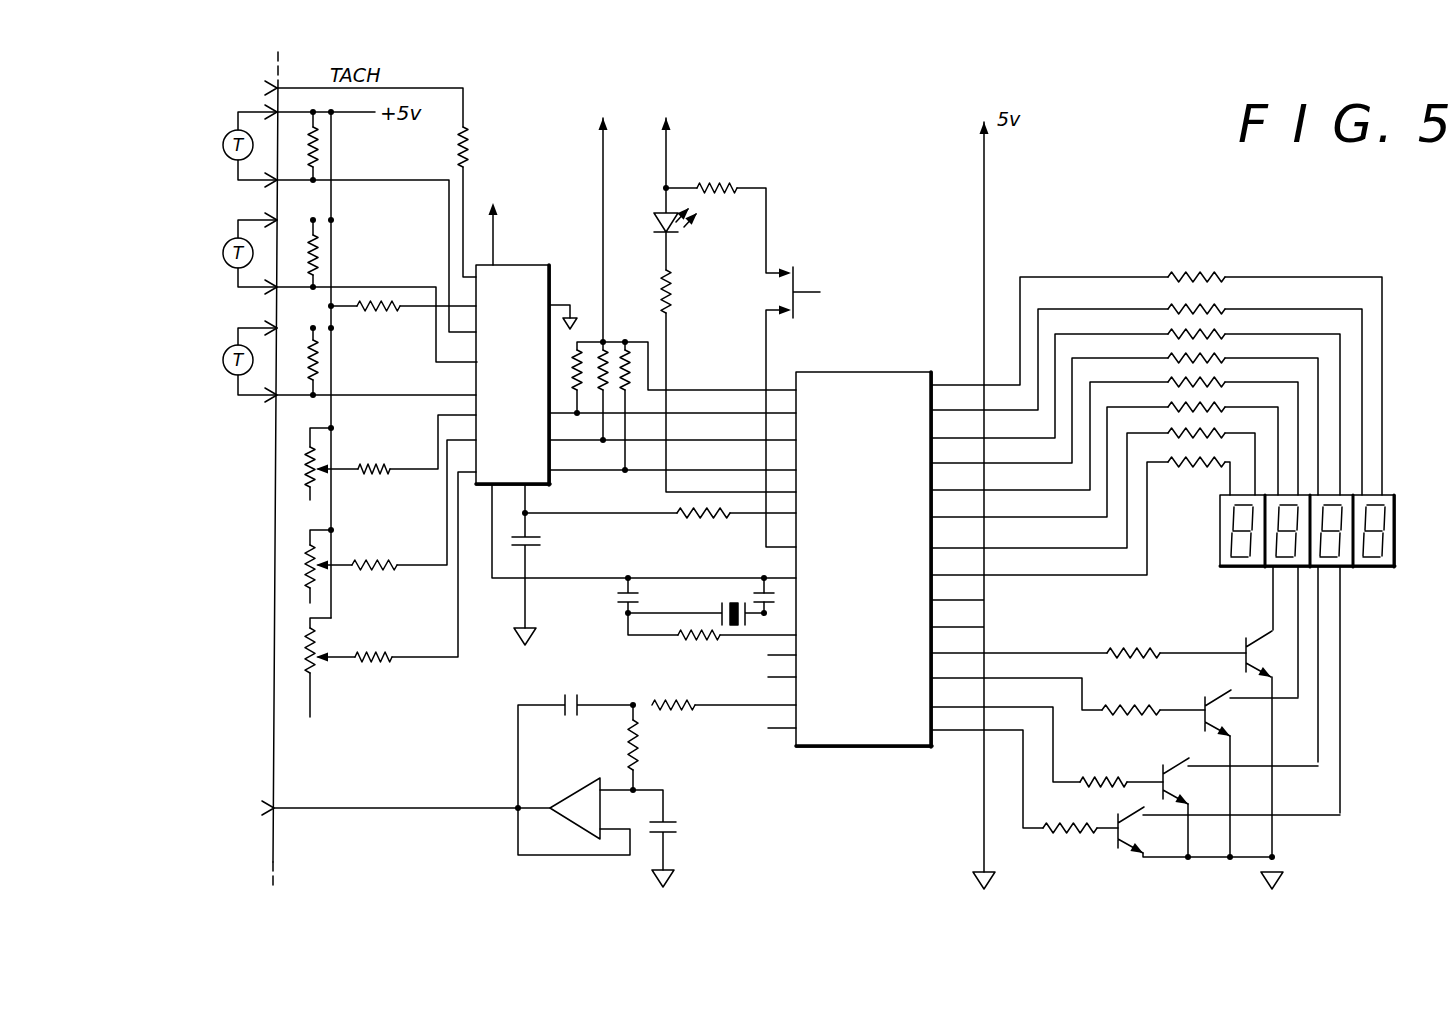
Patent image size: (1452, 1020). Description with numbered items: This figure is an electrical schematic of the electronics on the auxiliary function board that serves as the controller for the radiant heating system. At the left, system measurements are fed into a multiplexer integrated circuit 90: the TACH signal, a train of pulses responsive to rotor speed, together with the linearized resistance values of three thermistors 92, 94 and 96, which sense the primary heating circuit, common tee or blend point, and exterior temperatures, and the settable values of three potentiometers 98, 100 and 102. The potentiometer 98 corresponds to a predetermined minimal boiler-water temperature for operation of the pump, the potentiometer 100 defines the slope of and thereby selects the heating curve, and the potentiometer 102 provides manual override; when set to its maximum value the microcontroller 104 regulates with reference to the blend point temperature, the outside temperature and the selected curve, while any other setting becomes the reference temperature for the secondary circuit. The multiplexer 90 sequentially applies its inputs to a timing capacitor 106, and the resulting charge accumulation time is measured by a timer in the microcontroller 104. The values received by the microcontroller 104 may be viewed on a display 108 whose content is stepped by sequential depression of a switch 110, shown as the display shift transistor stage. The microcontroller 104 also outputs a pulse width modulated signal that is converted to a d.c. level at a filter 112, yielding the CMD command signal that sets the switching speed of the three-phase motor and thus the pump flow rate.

The multiplexer integrated circuit 90 is at (520, 265).
The thermistor 92 is at (225, 134).
The thermistor 94 is at (223, 243).
The thermistor 96 is at (225, 343).
The potentiometer 98 is at (302, 472).
The potentiometer 100 is at (298, 570).
The potentiometer 102 is at (299, 659).
The microcontroller 104 is at (858, 375).
The timing capacitor 106 is at (542, 540).
The display 108 is at (1375, 568).
The switch 110 is at (803, 247).
The filter 112 is at (543, 861).